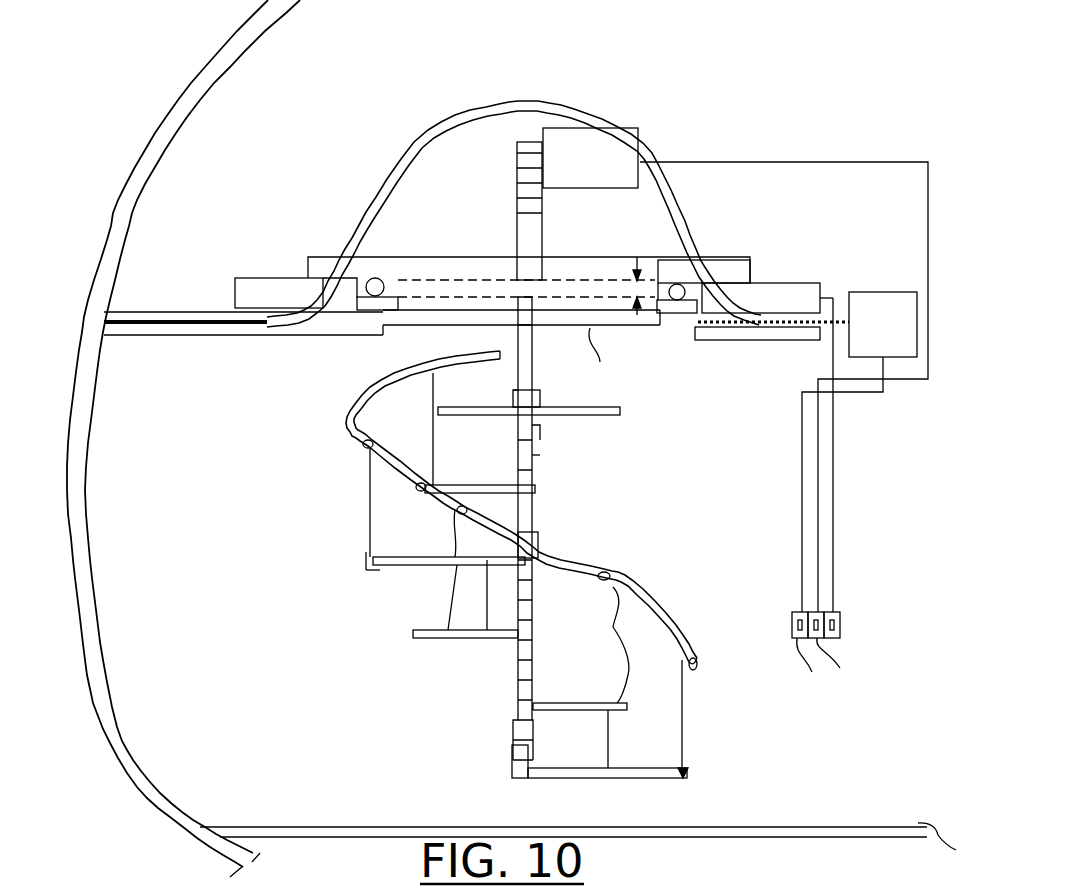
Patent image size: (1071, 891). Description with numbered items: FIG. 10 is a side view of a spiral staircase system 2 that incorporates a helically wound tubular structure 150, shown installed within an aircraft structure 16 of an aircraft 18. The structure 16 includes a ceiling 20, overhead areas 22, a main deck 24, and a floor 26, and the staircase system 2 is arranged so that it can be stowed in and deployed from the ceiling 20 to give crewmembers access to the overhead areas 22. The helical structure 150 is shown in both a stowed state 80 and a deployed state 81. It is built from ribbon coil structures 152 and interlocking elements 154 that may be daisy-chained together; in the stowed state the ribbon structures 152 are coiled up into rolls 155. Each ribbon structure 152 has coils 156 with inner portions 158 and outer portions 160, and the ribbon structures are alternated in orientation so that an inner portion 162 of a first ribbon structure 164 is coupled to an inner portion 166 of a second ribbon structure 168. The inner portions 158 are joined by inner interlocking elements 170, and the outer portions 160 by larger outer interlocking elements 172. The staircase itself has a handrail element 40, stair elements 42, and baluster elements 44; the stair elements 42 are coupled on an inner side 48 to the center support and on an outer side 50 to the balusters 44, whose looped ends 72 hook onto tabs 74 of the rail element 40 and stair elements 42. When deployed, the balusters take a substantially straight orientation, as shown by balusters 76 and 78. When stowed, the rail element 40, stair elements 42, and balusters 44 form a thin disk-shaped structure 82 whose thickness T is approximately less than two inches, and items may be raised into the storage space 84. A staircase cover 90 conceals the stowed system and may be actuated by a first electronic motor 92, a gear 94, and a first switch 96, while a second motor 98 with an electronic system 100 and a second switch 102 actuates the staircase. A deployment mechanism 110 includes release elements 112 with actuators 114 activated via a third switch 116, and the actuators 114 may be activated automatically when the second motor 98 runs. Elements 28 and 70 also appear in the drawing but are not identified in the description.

The spiral staircase system 2 is at (761, 34).
The aircraft structure 16 is at (74, 592).
The aircraft 18 is at (80, 585).
The ceiling 20 is at (163, 337).
The overhead areas 22 is at (218, 293).
The main deck 24 is at (168, 720).
The floor 26 is at (302, 842).
The housing 28 is at (383, 228).
The rail element 40 is at (400, 270).
The stair elements 42 is at (433, 420).
The baluster elements 44 is at (420, 432).
The inner side 48 is at (541, 535).
The outer side 50 is at (365, 600).
The upper arm 70 is at (622, 411).
The looped ends 72 is at (700, 765).
The tabs 74 is at (370, 559).
The balusters 76 is at (370, 492).
The balusters 78 is at (442, 586).
The stowed state 80 is at (593, 222).
The deployed state 81 is at (658, 478).
The disk-shaped structure 82 is at (705, 258).
The storage space 84 is at (448, 305).
The staircase cover 90 is at (668, 330).
The first electronic motor 92 is at (912, 292).
The gear 94 is at (848, 300).
The first switch 96 is at (810, 668).
The second motor 98 is at (645, 142).
The electronic system 100 is at (908, 402).
The second switch 102 is at (848, 659).
The deployment mechanism 110 is at (398, 270).
The release elements 112 is at (355, 265).
The actuators 114 is at (280, 278).
The third switch 116 is at (843, 625).
The helically wound tubular structure 150 is at (534, 372).
The ribbon coil structures 152 is at (534, 575).
The interlocking elements 154 is at (518, 466).
The rolls 155 is at (517, 190).
The coils 156 is at (517, 372).
The inner portions 158 is at (510, 320).
The outer portions 160 is at (541, 430).
The inner portion of first ribbon structure 162 is at (515, 680).
The first ribbon structure 164 is at (513, 722).
The inner portion of second ribbon structure 166 is at (540, 622).
The second ribbon structure 168 is at (540, 493).
The inner interlocking elements 170 is at (540, 652).
The outer interlocking elements 172 is at (540, 461).
The thickness T is at (637, 327).